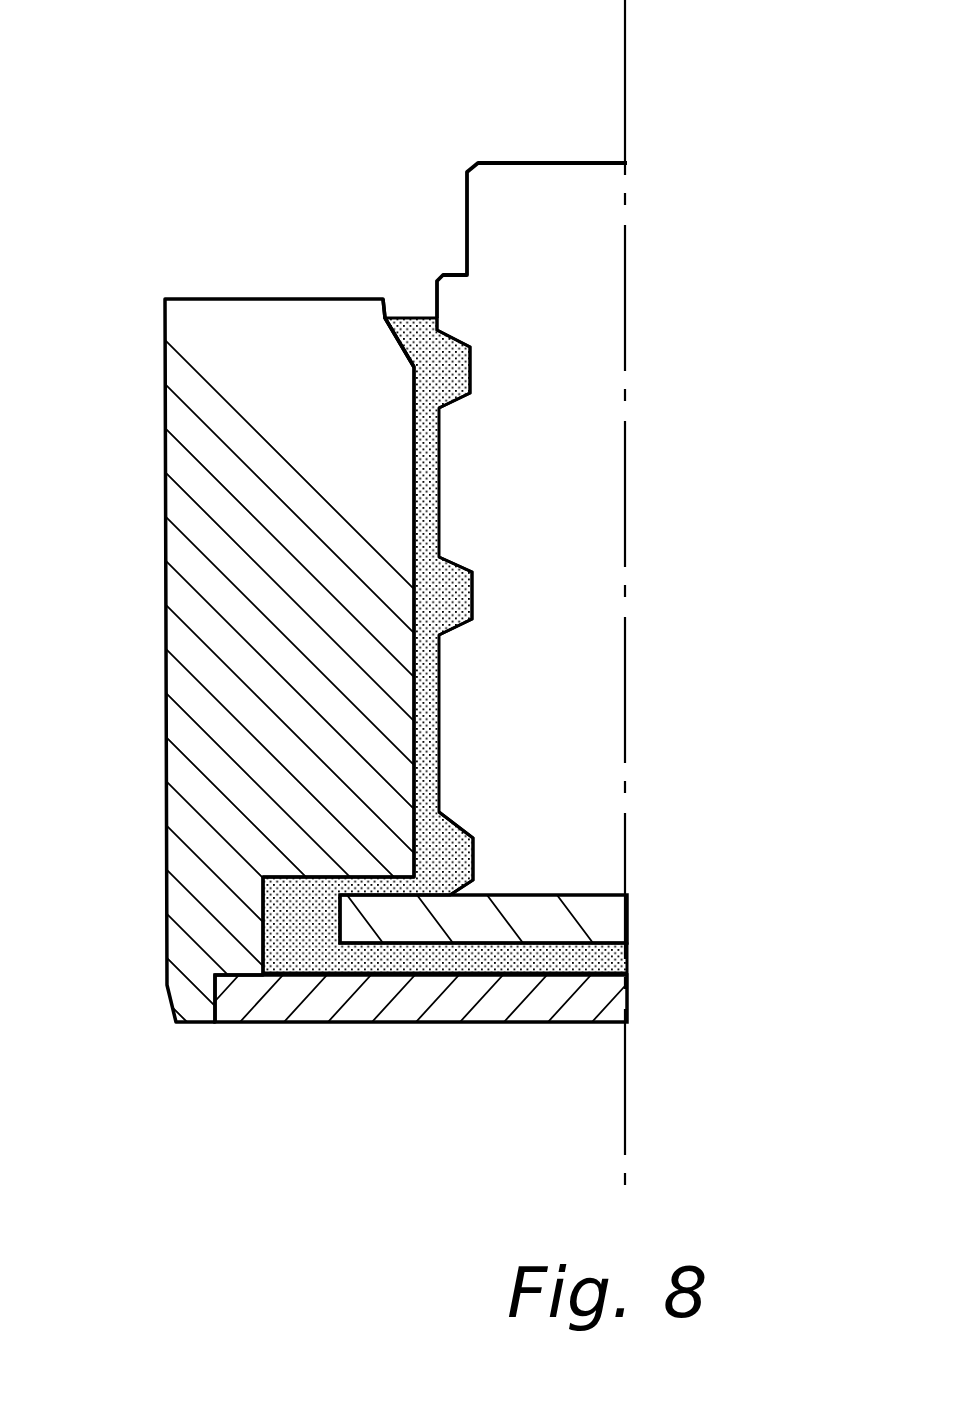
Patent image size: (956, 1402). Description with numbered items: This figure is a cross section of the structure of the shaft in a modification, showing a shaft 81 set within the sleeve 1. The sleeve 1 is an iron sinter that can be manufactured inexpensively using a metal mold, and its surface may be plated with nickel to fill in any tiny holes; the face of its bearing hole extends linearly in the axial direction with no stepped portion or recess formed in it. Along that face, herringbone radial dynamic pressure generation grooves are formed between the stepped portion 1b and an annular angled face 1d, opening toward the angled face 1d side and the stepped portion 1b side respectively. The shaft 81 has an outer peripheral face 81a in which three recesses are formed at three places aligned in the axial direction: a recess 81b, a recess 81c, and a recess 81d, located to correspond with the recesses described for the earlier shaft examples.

The sleeve 1 is at (207, 338).
The stepped portion 1b is at (330, 836).
The annular angled face 1d is at (390, 316).
The shaft 81 is at (565, 195).
The outer peripheral face 81a is at (448, 505).
The recess 81b is at (417, 327).
The recess 81c is at (429, 838).
The recess 81d is at (419, 592).